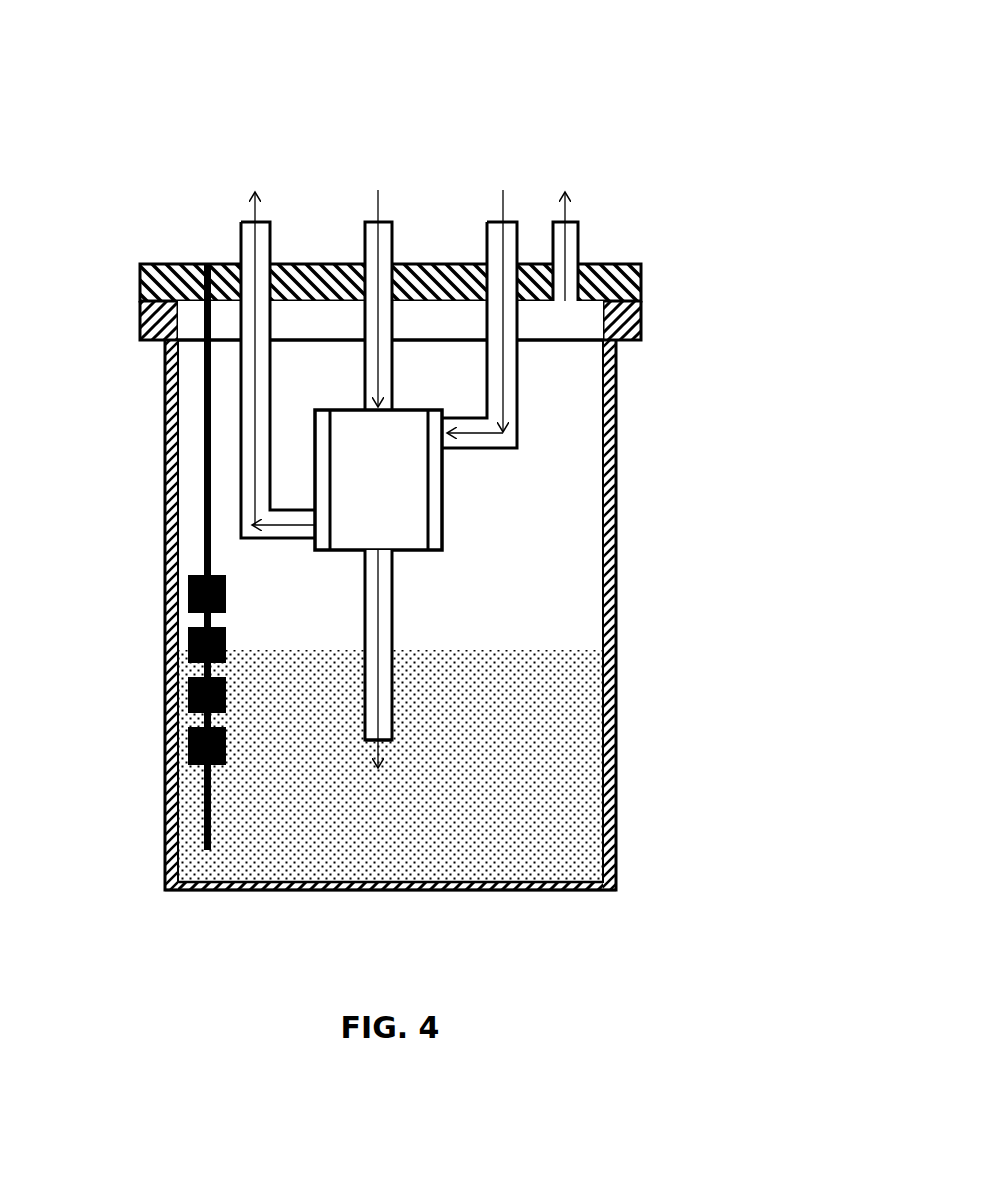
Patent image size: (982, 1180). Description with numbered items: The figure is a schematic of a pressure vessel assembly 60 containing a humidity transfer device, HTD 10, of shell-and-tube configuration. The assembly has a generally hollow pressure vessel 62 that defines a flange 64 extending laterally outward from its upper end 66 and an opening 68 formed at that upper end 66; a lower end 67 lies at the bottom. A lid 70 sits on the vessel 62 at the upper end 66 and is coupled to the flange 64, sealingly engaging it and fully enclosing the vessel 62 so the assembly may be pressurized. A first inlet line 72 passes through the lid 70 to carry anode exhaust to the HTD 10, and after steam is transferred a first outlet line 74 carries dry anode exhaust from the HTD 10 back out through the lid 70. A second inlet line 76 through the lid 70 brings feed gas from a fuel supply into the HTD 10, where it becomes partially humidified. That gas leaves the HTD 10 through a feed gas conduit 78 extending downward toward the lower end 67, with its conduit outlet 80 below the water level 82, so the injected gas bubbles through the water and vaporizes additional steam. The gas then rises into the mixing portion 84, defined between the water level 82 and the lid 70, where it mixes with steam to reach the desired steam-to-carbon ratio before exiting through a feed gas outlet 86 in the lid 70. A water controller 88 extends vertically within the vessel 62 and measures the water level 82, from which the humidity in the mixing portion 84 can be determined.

The HTD 10 is at (395, 503).
The pressure vessel assembly 60 is at (564, 95).
The pressure vessel 62 is at (610, 450).
The flange 64 is at (415, 249).
The upper end 66 is at (582, 341).
The lower end 67 is at (468, 892).
The opening 68 is at (315, 318).
The lid 70 is at (178, 275).
The first inlet line 72 is at (506, 232).
The first outlet line 74 is at (245, 245).
The second inlet line 76 is at (385, 228).
The feed gas conduit 78 is at (382, 595).
The conduit outlet 80 is at (371, 748).
The water level 82 is at (528, 650).
The mixing portion 84 is at (532, 488).
The feed gas outlet 86 is at (570, 240).
The water controller 88 is at (190, 590).